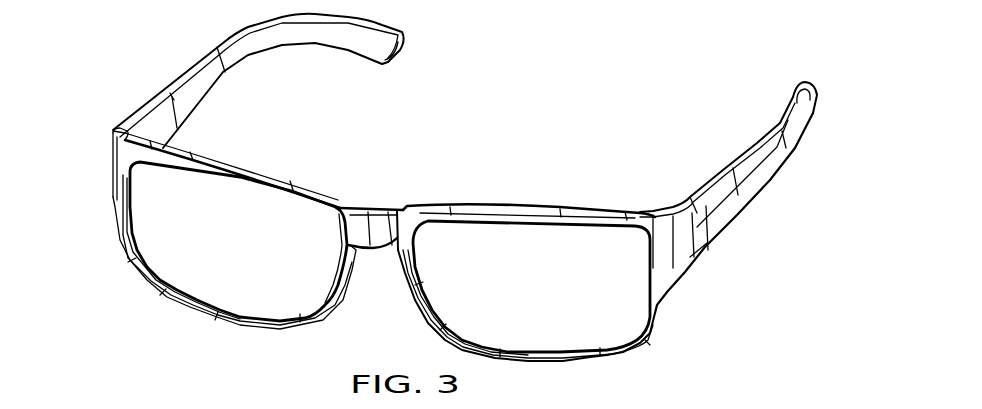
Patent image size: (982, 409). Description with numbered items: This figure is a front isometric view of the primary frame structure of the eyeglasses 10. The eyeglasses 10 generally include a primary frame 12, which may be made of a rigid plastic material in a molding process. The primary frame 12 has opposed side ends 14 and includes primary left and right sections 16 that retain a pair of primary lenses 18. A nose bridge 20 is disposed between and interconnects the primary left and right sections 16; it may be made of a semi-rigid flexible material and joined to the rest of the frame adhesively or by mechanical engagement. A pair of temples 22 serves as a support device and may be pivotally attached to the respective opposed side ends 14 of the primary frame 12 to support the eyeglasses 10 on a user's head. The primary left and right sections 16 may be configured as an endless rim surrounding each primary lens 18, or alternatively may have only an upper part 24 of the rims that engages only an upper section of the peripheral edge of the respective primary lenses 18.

The eyeglasses 10 is at (553, 88).
The primary frame 12 is at (633, 207).
The opposed side ends 14 is at (113, 175).
The primary left and right sections 16 is at (130, 267).
The primary lenses 18 is at (222, 233).
The nose bridge 20 is at (380, 237).
The temples 22 is at (217, 87).
The upper part 24 is at (279, 175).